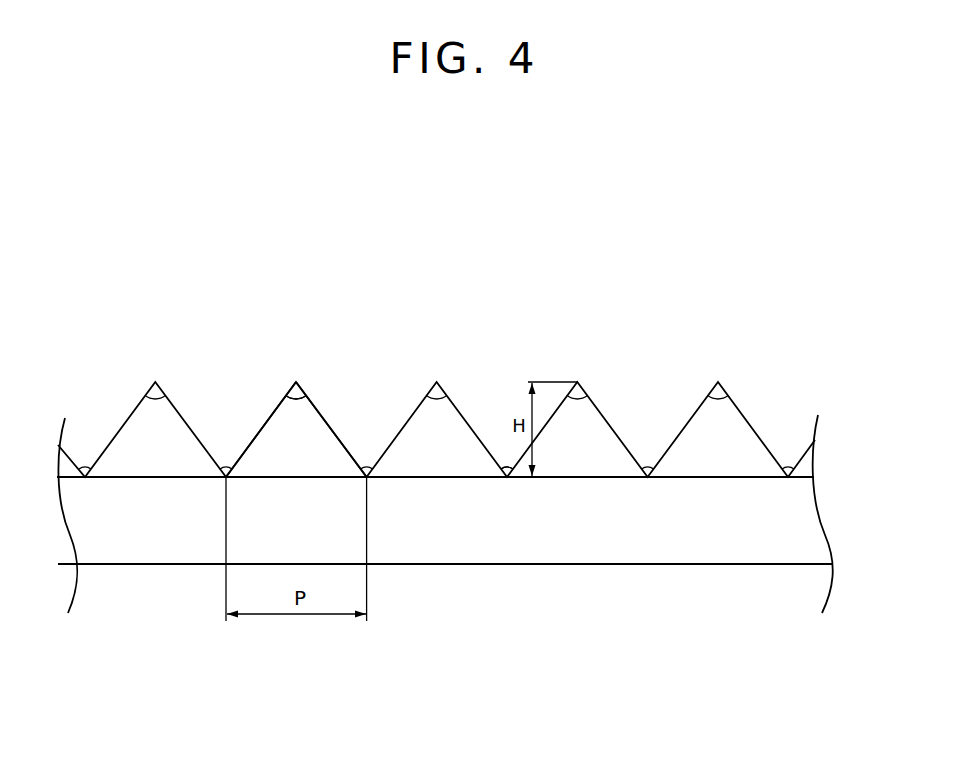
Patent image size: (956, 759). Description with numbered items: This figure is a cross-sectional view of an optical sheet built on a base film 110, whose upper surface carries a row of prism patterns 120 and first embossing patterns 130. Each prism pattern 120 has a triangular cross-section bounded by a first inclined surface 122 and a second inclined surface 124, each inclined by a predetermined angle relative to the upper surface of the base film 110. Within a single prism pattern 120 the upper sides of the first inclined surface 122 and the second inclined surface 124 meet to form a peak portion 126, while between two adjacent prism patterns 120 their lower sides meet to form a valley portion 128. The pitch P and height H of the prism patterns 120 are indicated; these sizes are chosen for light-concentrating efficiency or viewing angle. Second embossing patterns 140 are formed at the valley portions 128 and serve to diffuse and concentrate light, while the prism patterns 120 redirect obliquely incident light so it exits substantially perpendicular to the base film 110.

The base film 110 is at (723, 522).
The prism pattern 120 is at (588, 453).
The first inclined surface 122 is at (265, 420).
The second inclined surface 124 is at (326, 415).
The peak portion 126 is at (296, 383).
The valley portion 128 is at (507, 478).
The first embossing pattern 130 is at (441, 387).
The second embossing pattern 140 is at (645, 462).